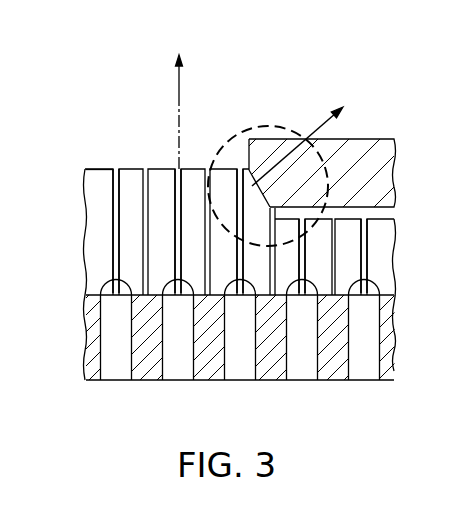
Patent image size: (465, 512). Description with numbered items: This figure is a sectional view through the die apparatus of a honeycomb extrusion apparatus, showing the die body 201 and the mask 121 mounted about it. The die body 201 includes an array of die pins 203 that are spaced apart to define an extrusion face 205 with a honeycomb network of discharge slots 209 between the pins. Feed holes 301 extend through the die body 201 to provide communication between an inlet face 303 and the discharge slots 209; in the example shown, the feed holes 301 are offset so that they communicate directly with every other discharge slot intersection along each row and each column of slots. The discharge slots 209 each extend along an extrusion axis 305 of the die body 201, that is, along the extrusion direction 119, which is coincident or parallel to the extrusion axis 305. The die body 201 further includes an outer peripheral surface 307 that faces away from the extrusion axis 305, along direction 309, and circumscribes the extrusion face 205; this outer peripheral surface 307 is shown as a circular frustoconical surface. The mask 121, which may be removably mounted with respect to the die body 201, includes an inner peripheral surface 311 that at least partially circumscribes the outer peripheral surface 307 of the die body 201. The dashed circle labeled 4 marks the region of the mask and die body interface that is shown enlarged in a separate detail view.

The die body 201 is at (75, 263).
The die pins 203 is at (93, 187).
The extrusion face 205 is at (132, 168).
The discharge slots 209 is at (115, 169).
The feed holes 301 is at (117, 380).
The inlet face 303 is at (212, 384).
The mask 121 is at (372, 139).
The outer peripheral surface 307 is at (262, 162).
The inner peripheral surface 311 is at (250, 179).
The direction 309 is at (318, 123).
The extrusion axis 305 is at (179, 110).
The extrusion direction 119 is at (181, 72).
The detail region of FIG. 4 is at (328, 180).